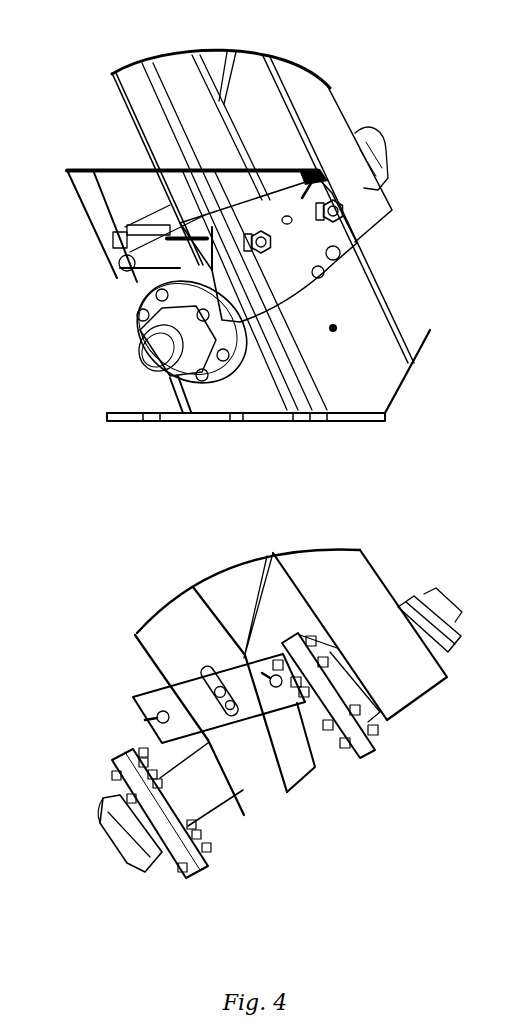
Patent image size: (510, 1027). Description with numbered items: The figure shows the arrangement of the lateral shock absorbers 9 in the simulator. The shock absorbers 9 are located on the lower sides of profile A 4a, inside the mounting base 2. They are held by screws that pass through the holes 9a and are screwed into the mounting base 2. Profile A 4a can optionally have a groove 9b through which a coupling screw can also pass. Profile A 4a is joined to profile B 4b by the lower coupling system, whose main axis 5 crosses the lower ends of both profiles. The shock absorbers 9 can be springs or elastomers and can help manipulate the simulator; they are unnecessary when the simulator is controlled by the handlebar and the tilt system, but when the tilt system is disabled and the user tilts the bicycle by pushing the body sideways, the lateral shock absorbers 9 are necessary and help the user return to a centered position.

The mounting base 2 is at (337, 325).
The profile A 4a is at (163, 113).
The profile B 4b is at (302, 108).
The main axis 5 is at (112, 848).
The lateral shock absorbers 9 is at (146, 202).
The holes 9a is at (298, 212).
The groove 9b is at (200, 683).